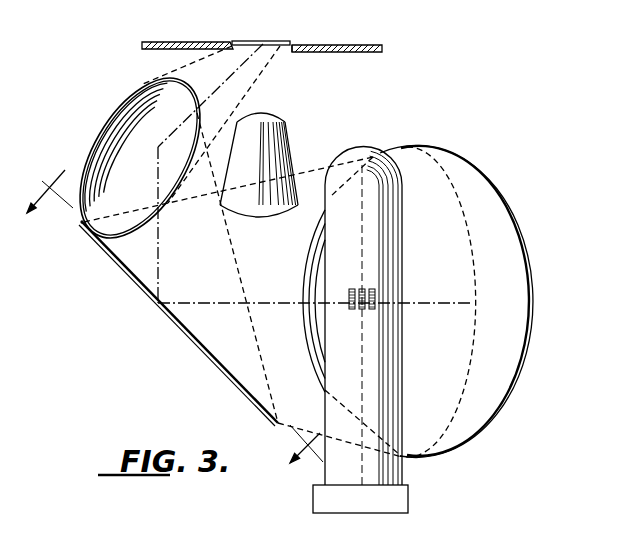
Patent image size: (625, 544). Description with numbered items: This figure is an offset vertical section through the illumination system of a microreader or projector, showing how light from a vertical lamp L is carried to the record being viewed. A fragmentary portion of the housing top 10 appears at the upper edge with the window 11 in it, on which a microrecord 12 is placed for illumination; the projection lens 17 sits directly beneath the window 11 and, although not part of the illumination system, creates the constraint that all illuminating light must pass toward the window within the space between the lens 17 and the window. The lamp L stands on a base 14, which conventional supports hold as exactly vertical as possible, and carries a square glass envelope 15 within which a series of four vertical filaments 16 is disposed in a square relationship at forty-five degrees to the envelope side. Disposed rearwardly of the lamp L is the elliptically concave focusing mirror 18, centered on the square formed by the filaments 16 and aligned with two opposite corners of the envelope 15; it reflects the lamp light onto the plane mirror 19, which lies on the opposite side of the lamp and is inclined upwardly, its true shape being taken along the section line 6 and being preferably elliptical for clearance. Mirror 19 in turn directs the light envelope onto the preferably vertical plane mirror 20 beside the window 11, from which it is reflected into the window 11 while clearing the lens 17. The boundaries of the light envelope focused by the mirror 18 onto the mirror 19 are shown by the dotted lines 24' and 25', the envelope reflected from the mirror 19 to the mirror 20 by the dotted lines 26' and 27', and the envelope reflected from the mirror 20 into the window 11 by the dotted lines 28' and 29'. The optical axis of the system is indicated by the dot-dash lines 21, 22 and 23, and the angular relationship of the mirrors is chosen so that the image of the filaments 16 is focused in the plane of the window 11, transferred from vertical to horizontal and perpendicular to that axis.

The top 10 is at (344, 26).
The window 11 is at (292, 50).
The microrecord 12 is at (243, 36).
The base 14 is at (408, 509).
The envelope 15 is at (403, 256).
The filaments 16 is at (375, 297).
The projection lens 17 is at (284, 123).
The focusing mirror 18 is at (523, 322).
The plane mirror 19 is at (207, 352).
The plane mirror 20 is at (126, 112).
The dot dash line 21 is at (262, 304).
The dot dash line 22 is at (160, 251).
The dot dash line 23 is at (228, 84).
The dotted line 24' is at (228, 175).
The dotted line 25' is at (340, 424).
The dotted line 26' is at (237, 268).
The dotted line 27' is at (60, 224).
The dotted line 28' is at (182, 65).
The dotted line 29' is at (235, 124).
The lamp L is at (368, 146).
The line 6— 6 is at (175, 318).